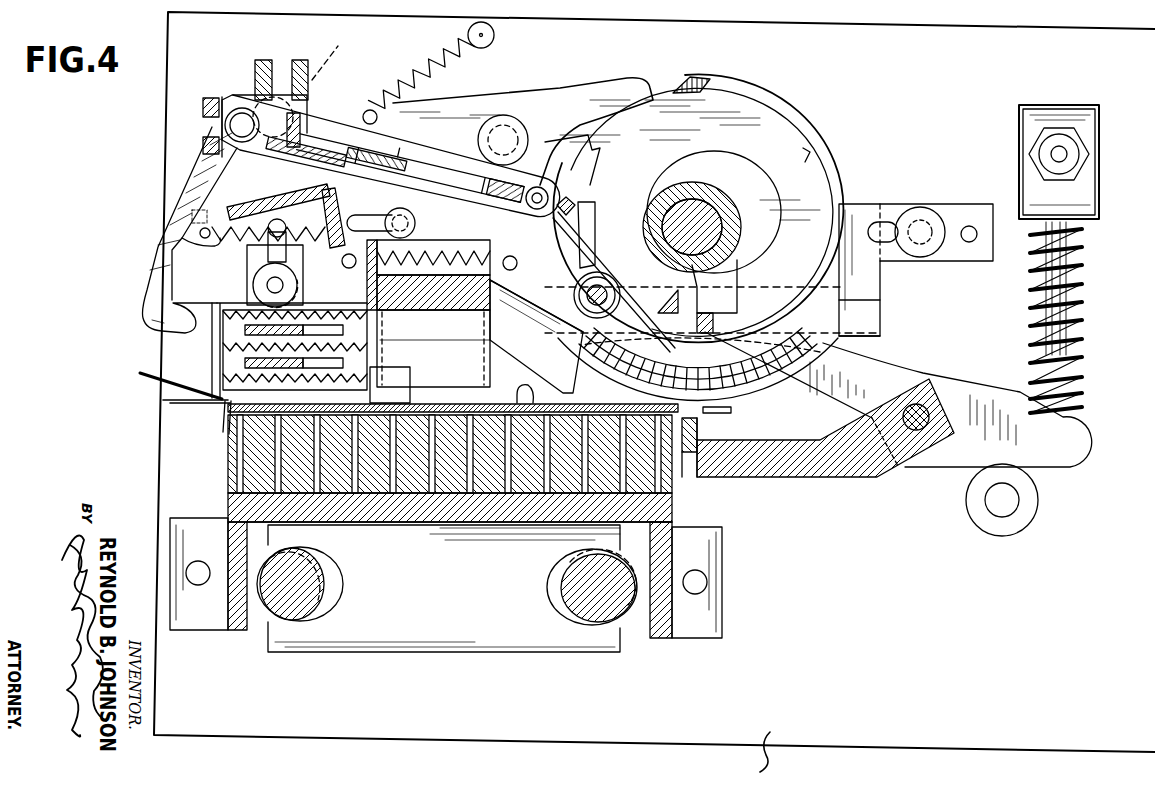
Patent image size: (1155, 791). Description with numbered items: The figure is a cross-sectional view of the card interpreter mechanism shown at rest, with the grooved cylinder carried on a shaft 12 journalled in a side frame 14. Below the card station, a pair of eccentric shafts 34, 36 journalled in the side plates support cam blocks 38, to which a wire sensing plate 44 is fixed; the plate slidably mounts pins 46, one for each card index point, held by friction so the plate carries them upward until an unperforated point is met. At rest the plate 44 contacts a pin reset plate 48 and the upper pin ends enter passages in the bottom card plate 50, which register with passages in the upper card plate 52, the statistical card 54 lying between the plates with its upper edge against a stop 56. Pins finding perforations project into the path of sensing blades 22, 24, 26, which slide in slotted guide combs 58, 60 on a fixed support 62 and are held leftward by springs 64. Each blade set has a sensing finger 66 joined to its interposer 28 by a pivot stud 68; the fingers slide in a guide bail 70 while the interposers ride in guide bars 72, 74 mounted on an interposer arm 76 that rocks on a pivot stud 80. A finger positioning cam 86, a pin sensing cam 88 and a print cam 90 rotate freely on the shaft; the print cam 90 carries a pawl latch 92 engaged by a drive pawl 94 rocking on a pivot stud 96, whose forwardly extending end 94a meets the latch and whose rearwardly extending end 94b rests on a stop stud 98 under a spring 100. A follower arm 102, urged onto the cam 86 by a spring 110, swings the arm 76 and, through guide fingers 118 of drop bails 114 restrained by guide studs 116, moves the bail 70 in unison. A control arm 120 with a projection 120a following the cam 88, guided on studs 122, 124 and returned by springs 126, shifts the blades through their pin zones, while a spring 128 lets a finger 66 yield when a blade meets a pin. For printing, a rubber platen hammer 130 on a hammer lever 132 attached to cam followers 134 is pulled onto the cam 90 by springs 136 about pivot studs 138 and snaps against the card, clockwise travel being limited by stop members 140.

The shaft 12 is at (708, 222).
The side frame 14 is at (772, 757).
The sensing blade 22 is at (528, 335).
The sensing blade 24 is at (520, 392).
The sensing blade 26 is at (356, 380).
The interposer 28 is at (400, 165).
The eccentric shaft 34 is at (280, 600).
The eccentric shaft 36 is at (610, 605).
The cam block 38 is at (505, 620).
The wire sensing plate 44 is at (228, 458).
The pin 46 is at (662, 488).
The pin reset plate 48 is at (442, 513).
The bottom card plate 50 is at (222, 418).
The upper card plate 52 is at (142, 372).
The statistical card 54 is at (165, 402).
The stop 56 is at (728, 412).
The guide comb 58 is at (535, 305).
The guide comb 60 is at (367, 262).
The fixed support 62 is at (432, 290).
The spring 64 is at (310, 312).
The sensing finger 66 is at (160, 272).
The pivot stud 68 is at (238, 110).
The guide bail 70 is at (230, 244).
The guide bar 72 is at (337, 137).
The guide bar 74 is at (447, 160).
The interposer arm 76 is at (440, 135).
The pivot stud 80 is at (539, 190).
The finger positioning cam 86 is at (785, 125).
The pin sensing cam 88 is at (810, 178).
The print cam 90 is at (715, 160).
The pawl latch 92 is at (740, 295).
The drive pawl 94 is at (720, 322).
The forwardly extending end 94a is at (725, 372).
The rearwardly extending end 94b is at (596, 222).
The pivot stud 96 is at (605, 288).
The stop stud 98 is at (570, 205).
The spring 100 is at (592, 245).
The follower arm 102 is at (548, 100).
The spring 110 is at (425, 80).
The drop bail 114 is at (264, 60).
The guide stud 116 is at (253, 286).
The guide finger 118 is at (203, 145).
The control arm 120 is at (875, 204).
The projection 120a is at (860, 299).
The guide stud 122 is at (925, 222).
The guide stud 124 is at (416, 224).
The spring 126 is at (515, 207).
The spring 128 is at (272, 222).
The rubber platen hammer 130 is at (700, 452).
The hammer lever 132 is at (843, 470).
The cam follower 134 is at (893, 372).
The spring 136 is at (1082, 295).
The pivot stud 138 is at (925, 408).
The stop member 140 is at (1025, 518).